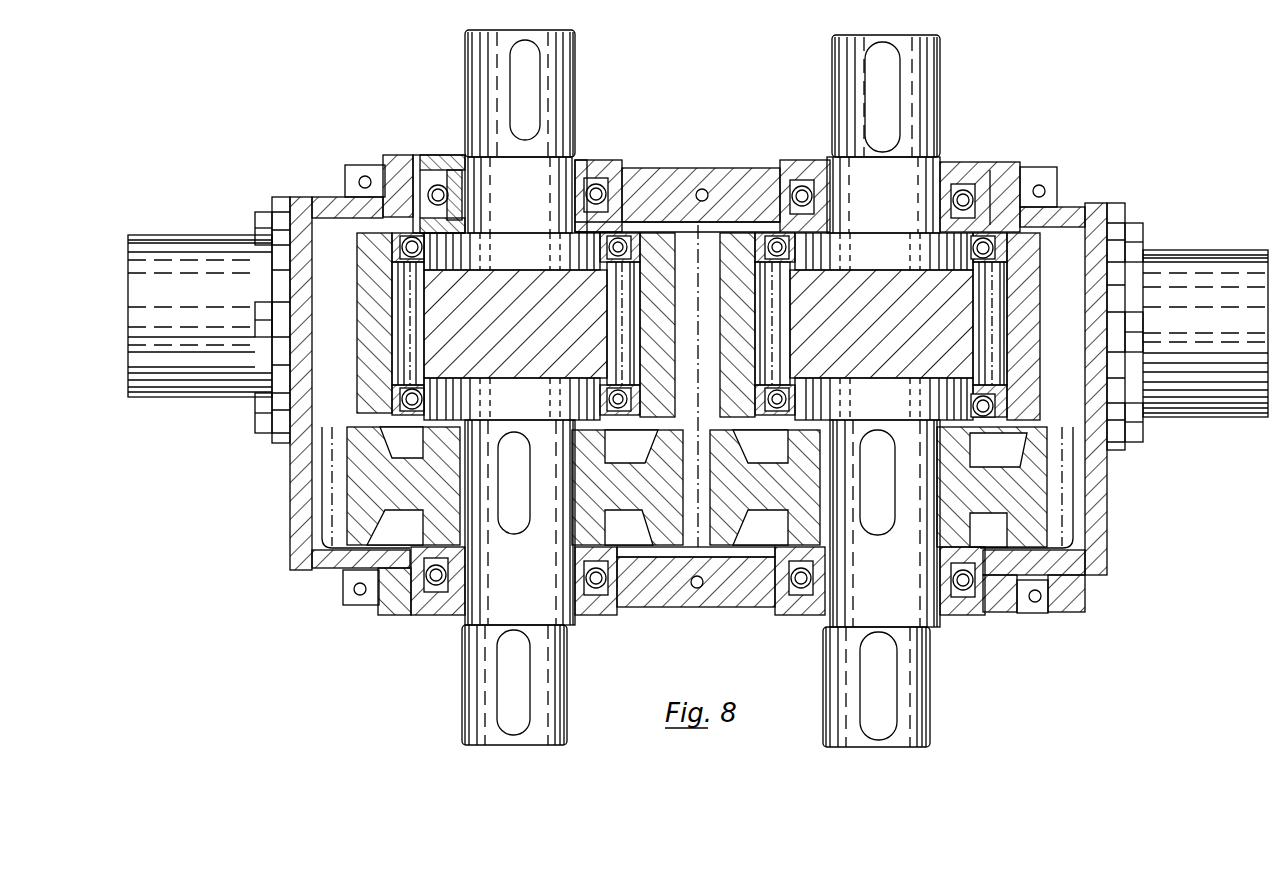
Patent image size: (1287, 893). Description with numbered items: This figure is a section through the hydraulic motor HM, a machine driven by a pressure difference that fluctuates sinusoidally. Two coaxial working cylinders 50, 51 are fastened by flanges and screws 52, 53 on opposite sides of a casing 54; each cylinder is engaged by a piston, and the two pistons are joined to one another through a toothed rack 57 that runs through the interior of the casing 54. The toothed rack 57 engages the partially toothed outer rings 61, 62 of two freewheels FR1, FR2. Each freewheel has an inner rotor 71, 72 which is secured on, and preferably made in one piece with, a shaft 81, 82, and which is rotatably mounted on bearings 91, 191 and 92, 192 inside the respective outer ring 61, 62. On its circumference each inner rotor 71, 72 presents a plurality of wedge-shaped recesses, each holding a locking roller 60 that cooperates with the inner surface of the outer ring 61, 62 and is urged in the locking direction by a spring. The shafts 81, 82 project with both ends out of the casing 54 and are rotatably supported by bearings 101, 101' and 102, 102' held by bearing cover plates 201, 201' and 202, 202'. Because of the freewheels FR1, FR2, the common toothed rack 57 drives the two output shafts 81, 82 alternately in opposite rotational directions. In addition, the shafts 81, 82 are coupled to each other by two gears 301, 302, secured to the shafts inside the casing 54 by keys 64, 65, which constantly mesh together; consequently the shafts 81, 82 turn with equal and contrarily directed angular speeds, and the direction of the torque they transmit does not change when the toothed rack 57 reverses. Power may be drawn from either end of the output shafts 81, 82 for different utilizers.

The working cylinder 50 is at (186, 398).
The working cylinder 51 is at (1218, 400).
The screws 52 is at (255, 412).
The screws 53 is at (1143, 242).
The casing 54 is at (291, 506).
The toothed rack 57 is at (688, 268).
The locking roller 60 is at (400, 254).
The outer ring 61 is at (374, 296).
The outer ring 62 is at (1033, 318).
The key 64 is at (516, 530).
The keyway of shaft 82 65 is at (876, 535).
The inner rotor 71 is at (600, 444).
The inner rotor 72 is at (795, 444).
The shaft 81 is at (501, 387).
The shaft 82 is at (885, 391).
The bearing 91 is at (411, 237).
The bearing 92 is at (988, 254).
The bearing 101 is at (581, 183).
The bearing 102 is at (989, 178).
The bearing 101' is at (408, 598).
The bearing 102' is at (983, 598).
The bearing 191 is at (401, 438).
The bearing 192 is at (983, 422).
The bearing cover plate 201 is at (598, 168).
The bearing cover plate 202 is at (885, 165).
The bearing cover plate 201' is at (612, 602).
The bearing cover plate 202' is at (788, 602).
The gear 301 is at (350, 483).
The gear 302 is at (1032, 517).
The freewheel FR1 is at (328, 389).
The freewheel FR2 is at (1118, 238).
The hydraulic motor HM is at (1062, 160).